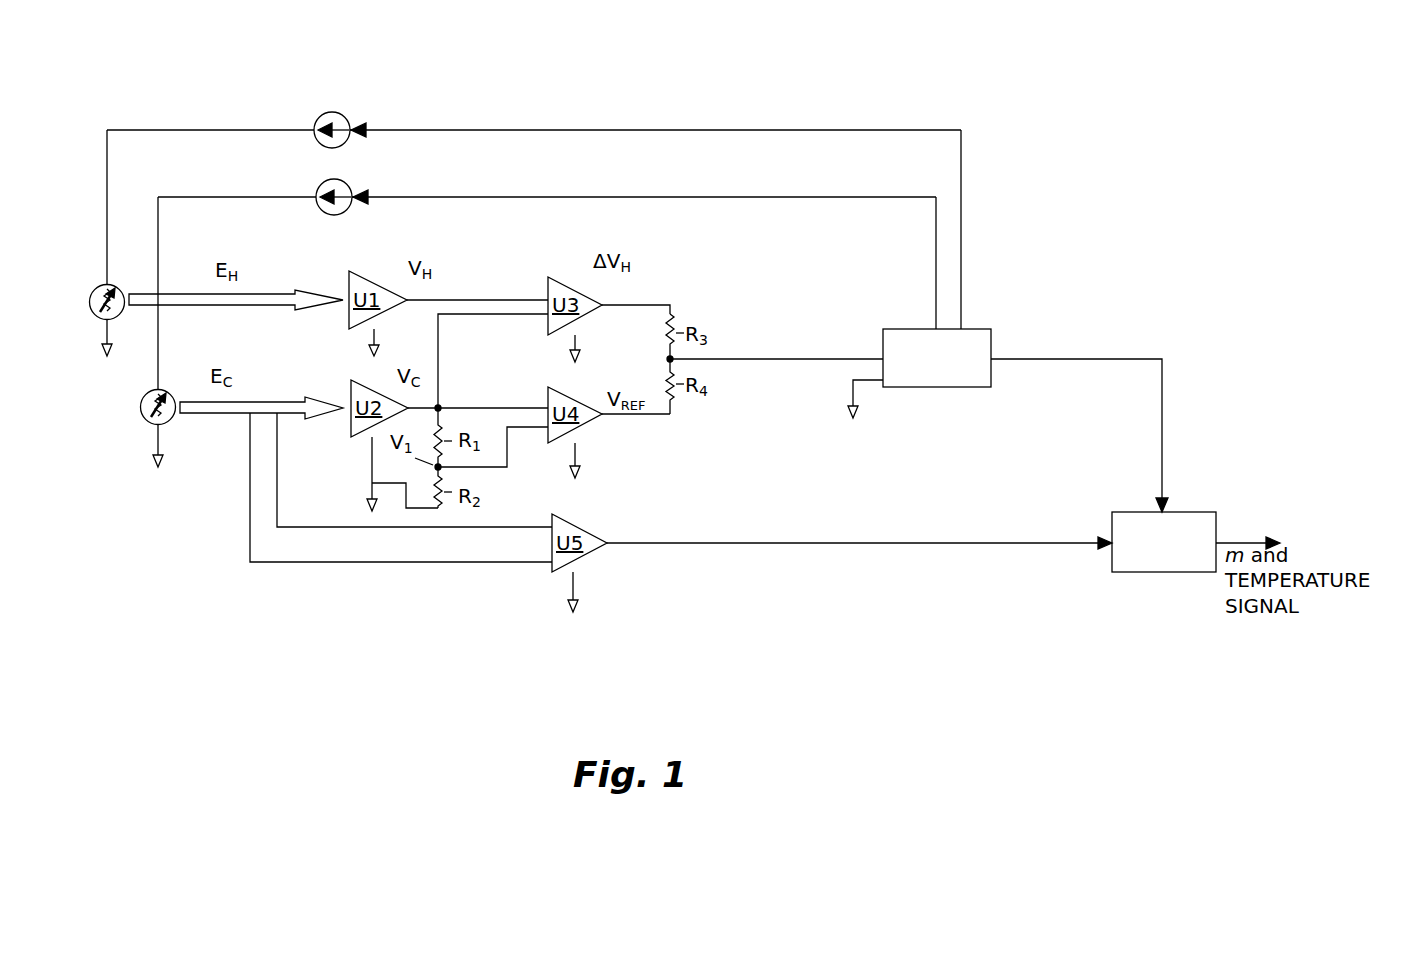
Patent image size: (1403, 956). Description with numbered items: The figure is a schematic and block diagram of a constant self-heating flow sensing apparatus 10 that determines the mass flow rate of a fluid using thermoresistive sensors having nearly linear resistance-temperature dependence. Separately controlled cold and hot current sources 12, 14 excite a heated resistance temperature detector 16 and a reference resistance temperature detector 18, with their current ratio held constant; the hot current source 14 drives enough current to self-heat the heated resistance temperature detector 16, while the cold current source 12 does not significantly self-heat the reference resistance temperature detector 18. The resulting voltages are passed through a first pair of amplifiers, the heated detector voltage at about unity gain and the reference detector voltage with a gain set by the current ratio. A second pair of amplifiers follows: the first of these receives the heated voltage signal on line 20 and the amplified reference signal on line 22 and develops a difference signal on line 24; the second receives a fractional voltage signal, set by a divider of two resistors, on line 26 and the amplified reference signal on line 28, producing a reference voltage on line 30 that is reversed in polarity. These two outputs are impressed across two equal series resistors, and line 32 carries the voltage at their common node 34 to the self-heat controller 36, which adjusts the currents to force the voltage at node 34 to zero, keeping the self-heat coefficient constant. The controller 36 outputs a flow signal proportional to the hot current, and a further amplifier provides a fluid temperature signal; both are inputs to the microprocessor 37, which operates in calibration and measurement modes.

The flow sensing apparatus 10 is at (596, 88).
The cold current source 12 is at (348, 208).
The hot current source 14 is at (345, 117).
The heated resistance temperature detector 16 is at (95, 315).
The reference resistance temperature detector 18 is at (146, 420).
The line 20 is at (446, 299).
The line 22 is at (486, 316).
The line 24 is at (648, 303).
The line 26 is at (508, 446).
The line 28 is at (475, 407).
The line 30 is at (641, 418).
The line 32 is at (780, 357).
The common node 34 is at (666, 359).
The self-heat controller 36 is at (1008, 420).
The microprocessor 37 is at (1196, 542).